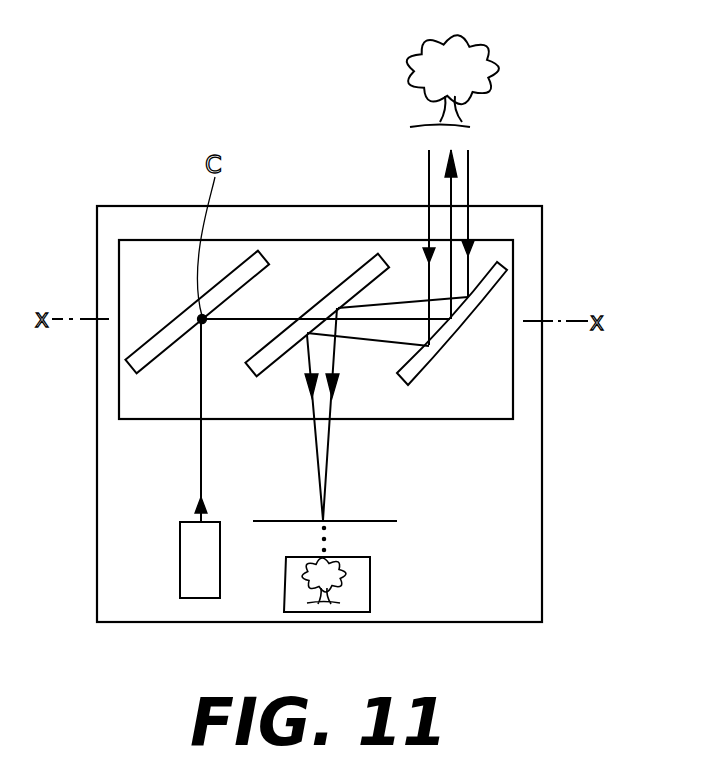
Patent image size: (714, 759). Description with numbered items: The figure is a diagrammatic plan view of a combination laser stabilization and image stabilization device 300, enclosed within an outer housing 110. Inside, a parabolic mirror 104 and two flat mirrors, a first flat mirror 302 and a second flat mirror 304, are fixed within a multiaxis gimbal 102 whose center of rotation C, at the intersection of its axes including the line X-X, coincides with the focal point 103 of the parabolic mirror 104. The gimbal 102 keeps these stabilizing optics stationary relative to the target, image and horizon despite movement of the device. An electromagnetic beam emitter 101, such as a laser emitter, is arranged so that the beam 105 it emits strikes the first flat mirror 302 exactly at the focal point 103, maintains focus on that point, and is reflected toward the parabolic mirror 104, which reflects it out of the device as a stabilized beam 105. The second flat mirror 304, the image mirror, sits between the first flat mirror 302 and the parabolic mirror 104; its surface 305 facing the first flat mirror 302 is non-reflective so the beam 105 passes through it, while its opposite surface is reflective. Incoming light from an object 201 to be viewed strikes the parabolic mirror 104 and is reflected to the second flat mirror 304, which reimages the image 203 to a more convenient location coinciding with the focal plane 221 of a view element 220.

The combination laser stabilization and image stabilization device 300 is at (103, 158).
The housing 110 is at (542, 418).
The multiaxis gimbal 102 is at (433, 419).
The first flat mirror 302 is at (258, 280).
The focal point 103 is at (198, 330).
The second flat mirror 304 is at (272, 362).
The surface 305 is at (295, 318).
The parabolic mirror 104 is at (427, 357).
The beam 105 is at (451, 187).
The object 201 is at (490, 70).
The electromagnetic beam emitter 101 is at (180, 548).
The focal plane 221 is at (363, 520).
The view element 220 is at (362, 557).
The image 203 is at (340, 572).